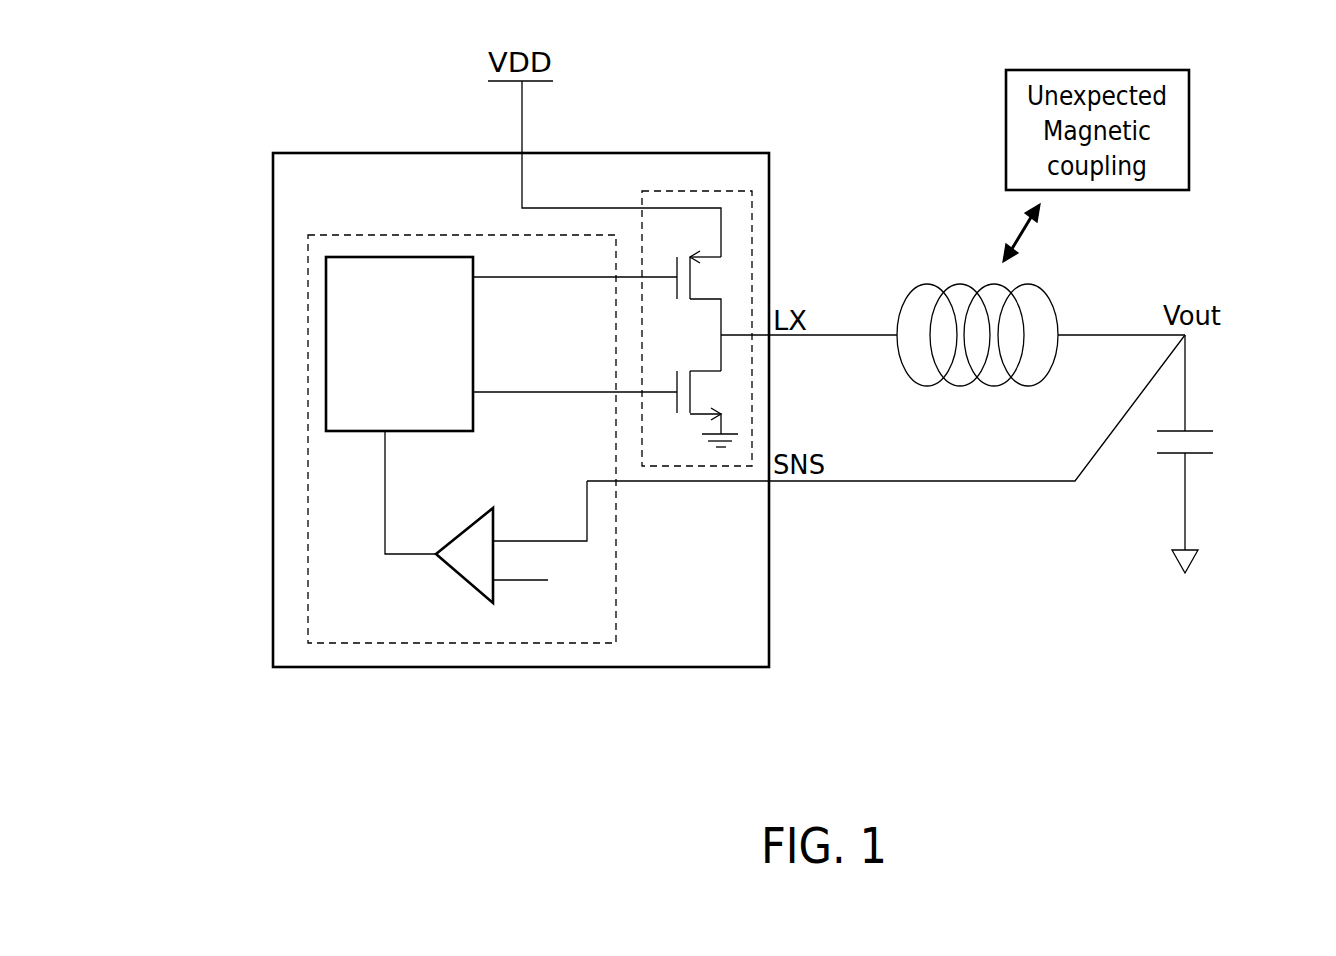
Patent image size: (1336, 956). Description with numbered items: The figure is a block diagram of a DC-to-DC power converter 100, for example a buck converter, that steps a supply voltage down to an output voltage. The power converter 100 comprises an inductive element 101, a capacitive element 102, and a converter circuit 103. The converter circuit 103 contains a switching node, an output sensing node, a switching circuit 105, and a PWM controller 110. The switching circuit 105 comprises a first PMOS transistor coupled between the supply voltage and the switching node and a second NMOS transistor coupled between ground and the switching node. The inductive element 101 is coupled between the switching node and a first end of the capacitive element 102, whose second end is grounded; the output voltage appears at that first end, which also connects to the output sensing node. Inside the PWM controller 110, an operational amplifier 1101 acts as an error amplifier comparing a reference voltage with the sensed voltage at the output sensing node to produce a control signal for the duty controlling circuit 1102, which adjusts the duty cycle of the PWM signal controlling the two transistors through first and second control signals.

The DC/DC power converter 100 is at (238, 76).
The inductive element 101 is at (932, 283).
The capacitive element 102 is at (1213, 454).
The converter circuit 103 is at (668, 153).
The switching circuit 105 is at (733, 190).
The PWM controller 110 is at (413, 643).
The operational amplifier 1101 is at (472, 589).
The duty controlling circuit 1102 is at (473, 412).